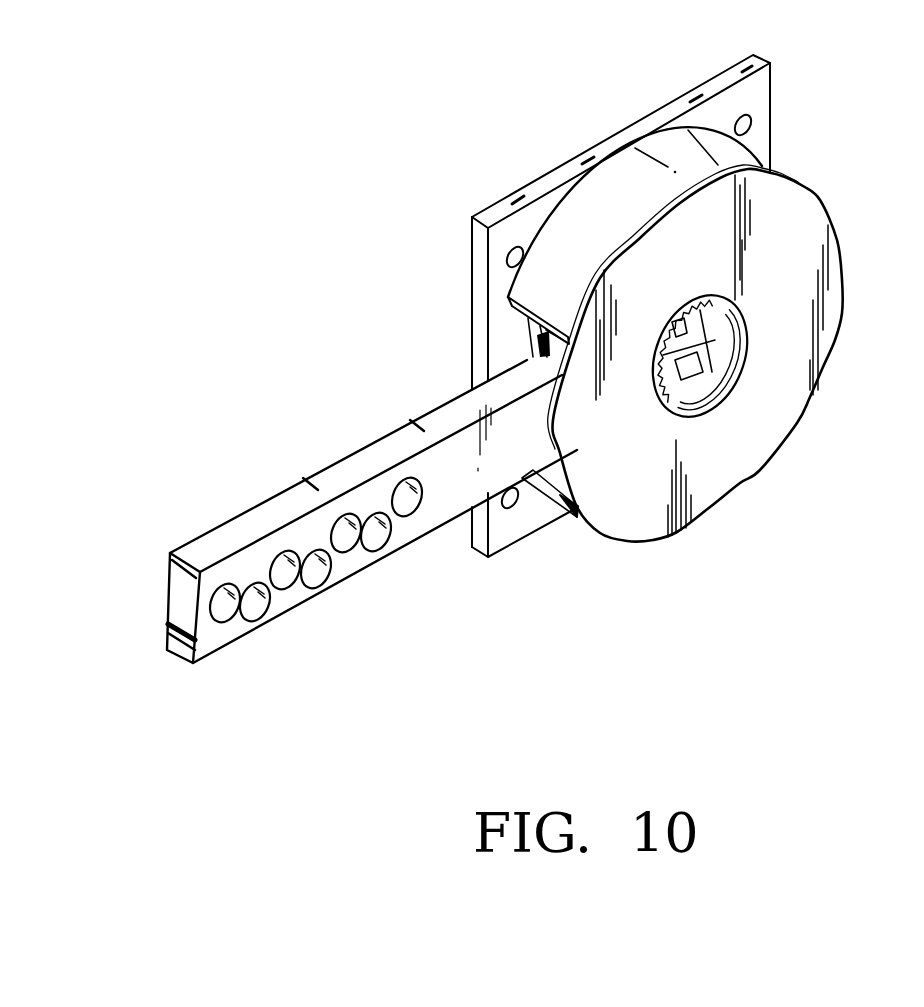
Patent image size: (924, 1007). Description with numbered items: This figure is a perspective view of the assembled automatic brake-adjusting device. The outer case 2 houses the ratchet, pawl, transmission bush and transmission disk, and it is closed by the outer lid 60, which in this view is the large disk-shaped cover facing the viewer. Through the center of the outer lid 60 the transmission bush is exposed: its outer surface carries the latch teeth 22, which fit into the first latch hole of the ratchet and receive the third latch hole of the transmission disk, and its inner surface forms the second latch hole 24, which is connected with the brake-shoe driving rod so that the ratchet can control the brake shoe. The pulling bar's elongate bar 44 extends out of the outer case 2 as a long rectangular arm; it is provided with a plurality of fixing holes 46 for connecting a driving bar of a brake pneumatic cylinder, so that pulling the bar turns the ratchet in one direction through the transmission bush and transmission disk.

The outer case 2 is at (578, 207).
The latch teeth 22 is at (703, 333).
The second latch hole 24 is at (697, 353).
The elongate bar 44 is at (398, 542).
The fixing holes 46 is at (258, 617).
The outer lid 60 is at (837, 268).